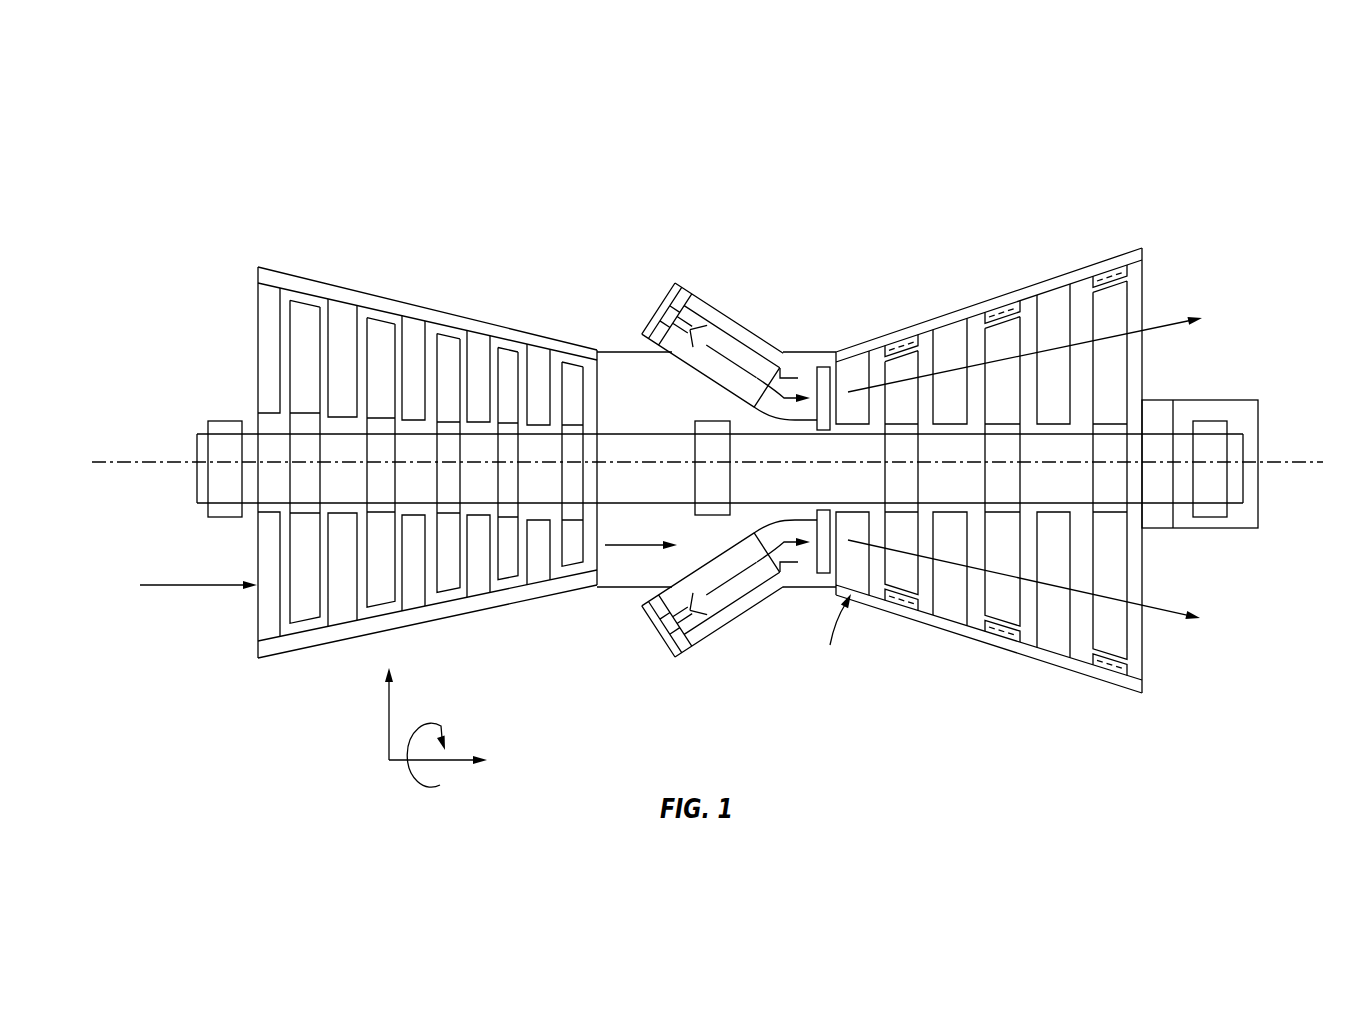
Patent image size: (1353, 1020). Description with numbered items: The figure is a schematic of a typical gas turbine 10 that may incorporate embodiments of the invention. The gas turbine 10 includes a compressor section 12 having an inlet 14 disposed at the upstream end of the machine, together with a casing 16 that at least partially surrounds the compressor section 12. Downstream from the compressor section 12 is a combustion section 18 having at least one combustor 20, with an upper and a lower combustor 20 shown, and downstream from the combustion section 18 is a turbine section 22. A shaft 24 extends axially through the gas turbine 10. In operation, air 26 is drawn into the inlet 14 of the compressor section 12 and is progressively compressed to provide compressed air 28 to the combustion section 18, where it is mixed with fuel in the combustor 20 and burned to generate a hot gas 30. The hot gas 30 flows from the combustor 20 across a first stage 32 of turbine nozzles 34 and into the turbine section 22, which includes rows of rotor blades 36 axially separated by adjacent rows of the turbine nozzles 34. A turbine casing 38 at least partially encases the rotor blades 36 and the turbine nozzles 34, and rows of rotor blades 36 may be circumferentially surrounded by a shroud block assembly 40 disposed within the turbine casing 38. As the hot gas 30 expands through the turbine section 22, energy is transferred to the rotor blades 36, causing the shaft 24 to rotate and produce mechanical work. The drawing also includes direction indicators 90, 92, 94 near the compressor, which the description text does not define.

The gas turbine 10 is at (655, 102).
The compressor section 12 is at (595, 338).
The inlet 14 is at (257, 338).
The casing 16 is at (277, 657).
The combustion section 18 is at (837, 343).
The combustor 20 is at (697, 290).
The turbine section 22 is at (836, 347).
The shaft 24 is at (1180, 433).
The air 26 is at (198, 585).
The compressed air 28 is at (615, 543).
The hot gas 30 is at (727, 357).
The first stage 32 is at (833, 636).
The turbine nozzles 34 is at (912, 348).
The rotor blades 36 is at (898, 568).
The turbine casing 38 is at (1068, 668).
The shroud block assembly 40 is at (1003, 313).
The circumferential direction 90 is at (412, 782).
The axial direction 92 is at (453, 757).
The radial direction 94 is at (389, 714).